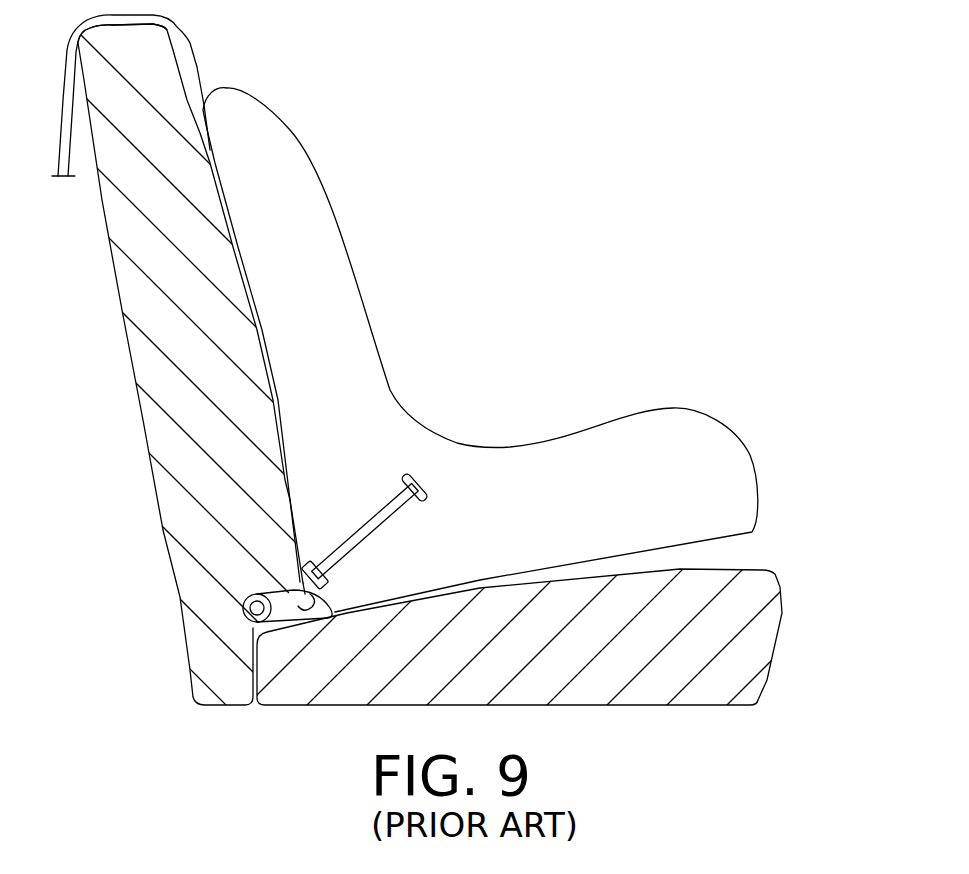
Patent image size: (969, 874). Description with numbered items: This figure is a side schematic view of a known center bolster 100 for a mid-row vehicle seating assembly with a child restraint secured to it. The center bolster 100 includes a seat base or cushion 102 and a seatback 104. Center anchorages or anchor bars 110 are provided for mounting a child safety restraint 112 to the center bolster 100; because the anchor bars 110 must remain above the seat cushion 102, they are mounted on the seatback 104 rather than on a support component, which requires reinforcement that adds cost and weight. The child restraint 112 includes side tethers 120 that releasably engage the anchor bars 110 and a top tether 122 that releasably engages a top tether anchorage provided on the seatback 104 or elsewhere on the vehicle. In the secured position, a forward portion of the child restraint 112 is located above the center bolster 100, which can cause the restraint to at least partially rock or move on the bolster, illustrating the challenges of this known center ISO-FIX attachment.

The center bolster 100 is at (491, 435).
The seat base or cushion 102 is at (750, 637).
The seatback 104 is at (173, 385).
The center anchorages or anchor bars 110 is at (283, 622).
The child safety restraint 112 is at (382, 362).
The side tethers 120 is at (370, 523).
The top tether 122 is at (187, 50).